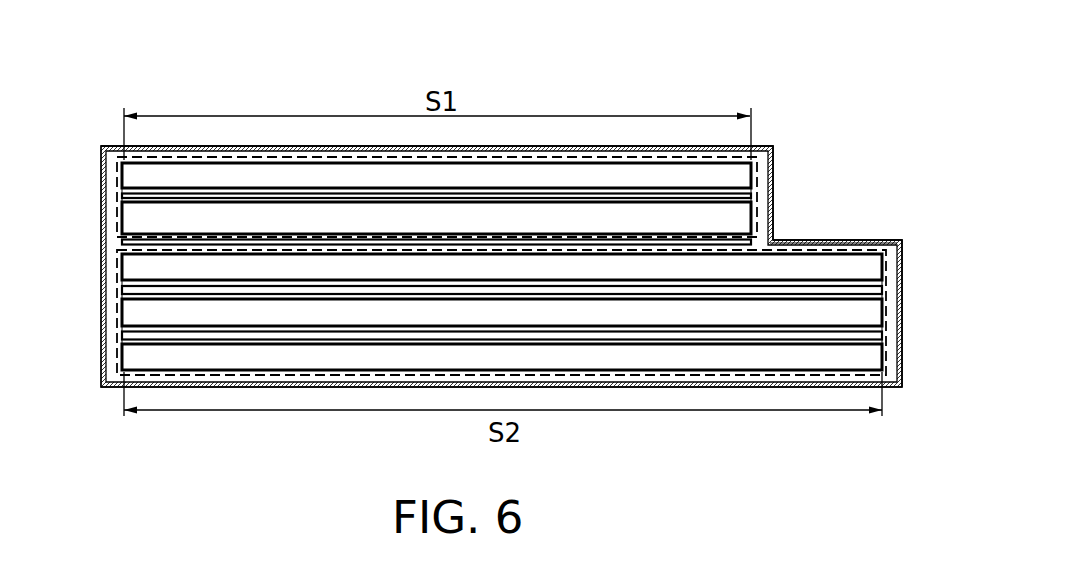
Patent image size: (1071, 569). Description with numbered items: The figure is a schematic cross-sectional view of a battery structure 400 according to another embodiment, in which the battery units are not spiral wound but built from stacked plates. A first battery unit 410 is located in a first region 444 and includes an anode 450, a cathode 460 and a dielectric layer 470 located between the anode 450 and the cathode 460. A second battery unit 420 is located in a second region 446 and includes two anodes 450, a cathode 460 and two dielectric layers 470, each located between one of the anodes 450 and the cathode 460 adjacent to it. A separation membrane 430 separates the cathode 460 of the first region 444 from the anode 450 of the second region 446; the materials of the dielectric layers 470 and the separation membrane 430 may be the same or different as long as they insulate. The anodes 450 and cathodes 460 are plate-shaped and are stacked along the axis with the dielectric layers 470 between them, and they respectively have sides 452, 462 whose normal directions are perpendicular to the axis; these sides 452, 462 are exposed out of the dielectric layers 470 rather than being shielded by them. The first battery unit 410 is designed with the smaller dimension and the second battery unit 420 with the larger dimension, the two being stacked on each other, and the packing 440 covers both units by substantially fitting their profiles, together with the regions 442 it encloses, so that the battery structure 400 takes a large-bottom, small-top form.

The battery structure 400 is at (99, 108).
The first battery unit 410 is at (114, 199).
The second battery unit 420 is at (114, 309).
The separation membrane 430 is at (771, 241).
The packing 440 is at (103, 147).
The encapsulant layers 442 is at (897, 66).
The first region 444 is at (748, 146).
The second region 446 is at (863, 240).
The anode 450 is at (502, 268).
The sides of the anodes 452 is at (117, 163).
The cathode 460 is at (502, 266).
The sides of the cathodes 462 is at (114, 228).
The dielectric layer 470 is at (753, 181).